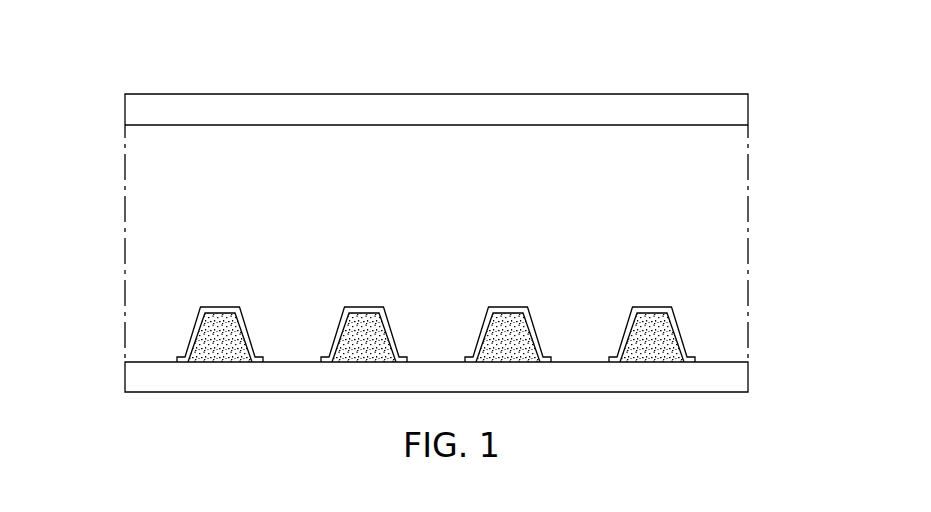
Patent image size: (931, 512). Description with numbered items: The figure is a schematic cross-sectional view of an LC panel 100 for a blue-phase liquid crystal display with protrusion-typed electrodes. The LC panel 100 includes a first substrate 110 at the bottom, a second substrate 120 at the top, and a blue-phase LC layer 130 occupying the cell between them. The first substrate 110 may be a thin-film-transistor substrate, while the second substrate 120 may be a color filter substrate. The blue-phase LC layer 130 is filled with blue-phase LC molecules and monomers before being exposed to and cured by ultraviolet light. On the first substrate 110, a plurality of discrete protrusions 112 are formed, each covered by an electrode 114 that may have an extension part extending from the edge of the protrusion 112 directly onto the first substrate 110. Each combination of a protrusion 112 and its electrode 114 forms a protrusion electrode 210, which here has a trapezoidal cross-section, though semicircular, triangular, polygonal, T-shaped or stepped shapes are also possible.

The LC panel 100 is at (738, 42).
The first substrate 110 is at (741, 386).
The second substrate 120 is at (741, 112).
The blue-phase LC layer 130 is at (741, 251).
The protrusion electrode 210 is at (82, 285).
The protrusion 112 is at (207, 352).
The electrode 114 is at (200, 316).